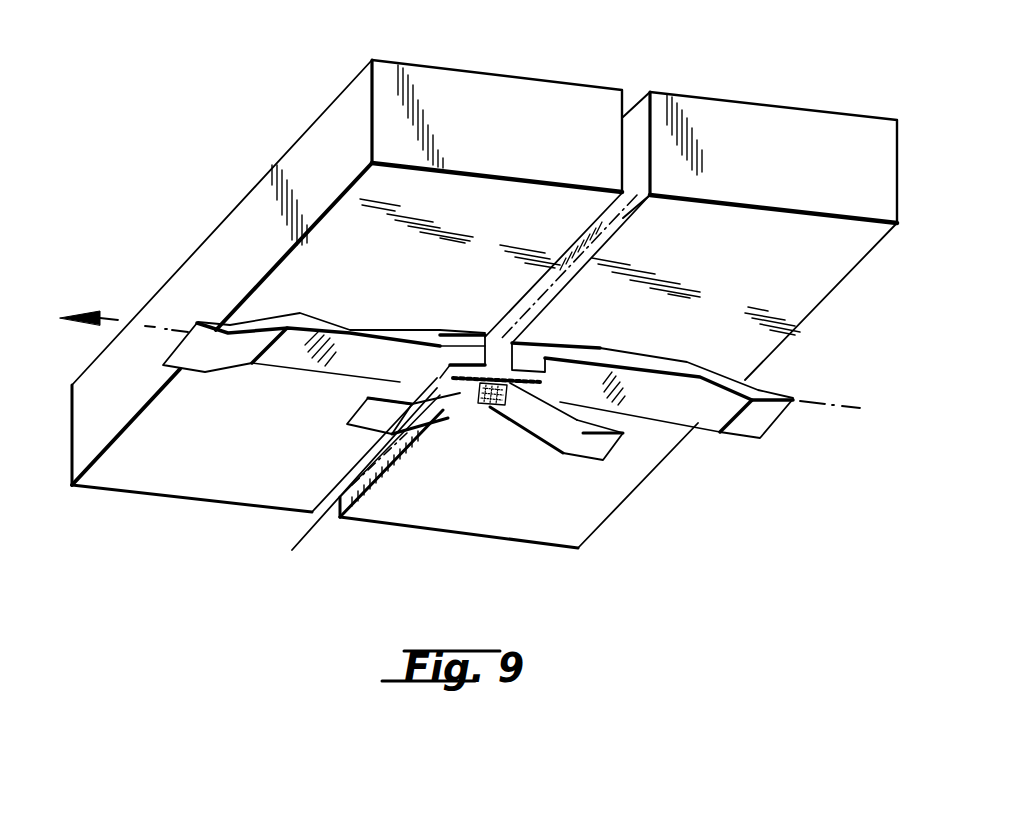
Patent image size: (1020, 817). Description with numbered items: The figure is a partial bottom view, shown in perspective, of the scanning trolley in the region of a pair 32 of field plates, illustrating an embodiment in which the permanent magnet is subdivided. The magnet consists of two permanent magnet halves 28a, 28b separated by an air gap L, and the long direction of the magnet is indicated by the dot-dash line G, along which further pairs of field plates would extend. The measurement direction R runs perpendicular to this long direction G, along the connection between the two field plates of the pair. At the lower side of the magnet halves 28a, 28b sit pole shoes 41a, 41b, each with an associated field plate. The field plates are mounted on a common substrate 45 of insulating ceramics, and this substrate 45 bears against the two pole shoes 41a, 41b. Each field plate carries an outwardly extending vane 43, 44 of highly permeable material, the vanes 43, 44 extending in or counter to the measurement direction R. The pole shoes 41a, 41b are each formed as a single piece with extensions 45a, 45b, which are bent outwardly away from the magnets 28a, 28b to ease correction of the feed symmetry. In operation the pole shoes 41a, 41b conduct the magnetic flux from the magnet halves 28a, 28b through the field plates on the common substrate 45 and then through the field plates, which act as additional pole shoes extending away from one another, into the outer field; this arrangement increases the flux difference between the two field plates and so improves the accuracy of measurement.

The permanent magnet half 28a is at (432, 92).
The permanent magnet half 28b is at (710, 118).
The air gap L is at (640, 127).
The long direction of the permanent magnet G is at (625, 215).
The measurement direction R is at (113, 318).
The pair of field plates 32 is at (470, 455).
The pole shoe 41a is at (467, 358).
The pole shoe 41b is at (530, 360).
The substrate 45 is at (477, 403).
The vane 43 is at (370, 425).
The vane 44 is at (582, 447).
The extension 45a is at (193, 360).
The extension 45b is at (747, 427).